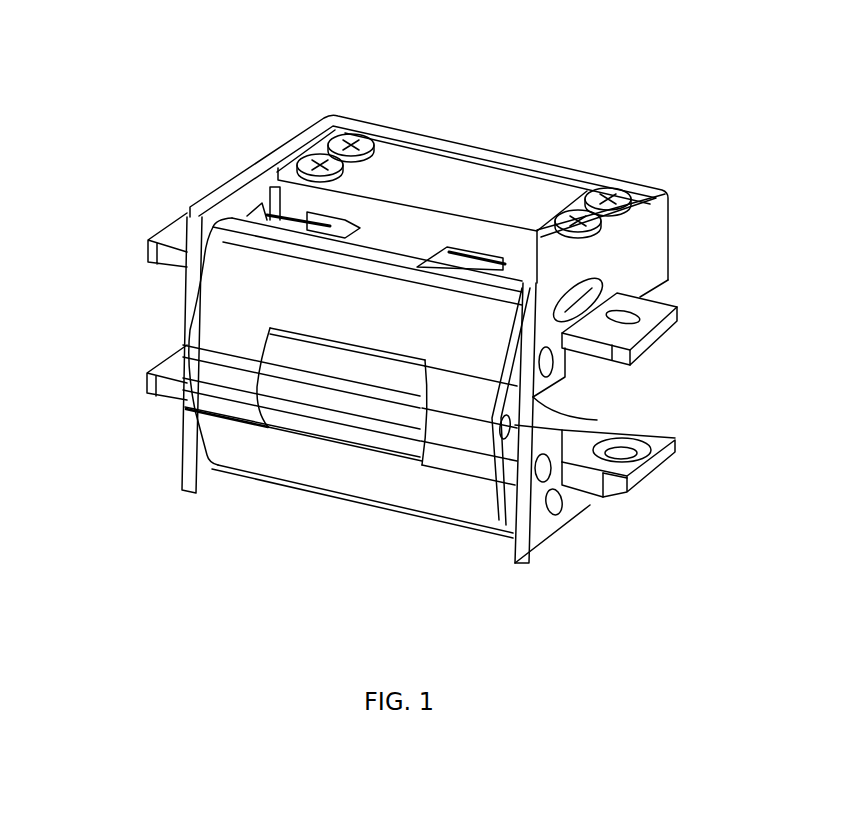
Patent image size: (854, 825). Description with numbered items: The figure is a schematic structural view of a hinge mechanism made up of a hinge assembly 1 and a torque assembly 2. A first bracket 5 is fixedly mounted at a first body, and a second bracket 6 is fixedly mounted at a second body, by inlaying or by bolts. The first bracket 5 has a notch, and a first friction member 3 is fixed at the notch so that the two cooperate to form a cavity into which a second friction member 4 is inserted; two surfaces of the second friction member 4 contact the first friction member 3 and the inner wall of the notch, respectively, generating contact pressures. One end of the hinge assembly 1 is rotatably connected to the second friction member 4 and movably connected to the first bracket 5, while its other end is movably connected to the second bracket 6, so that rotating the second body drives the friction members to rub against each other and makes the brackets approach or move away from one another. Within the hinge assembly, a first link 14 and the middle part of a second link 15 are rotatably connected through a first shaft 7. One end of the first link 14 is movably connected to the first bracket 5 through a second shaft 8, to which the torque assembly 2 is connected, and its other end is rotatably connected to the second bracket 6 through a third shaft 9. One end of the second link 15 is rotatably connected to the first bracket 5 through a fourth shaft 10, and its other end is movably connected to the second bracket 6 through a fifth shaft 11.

The hinge assembly 1 is at (507, 130).
The torque assembly 2 is at (142, 315).
The first friction member 3 is at (535, 187).
The second friction member 4 is at (348, 205).
The first bracket 5 is at (638, 265).
The second bracket 6 is at (627, 476).
The first shaft 7 is at (597, 420).
The second shaft 8 is at (632, 318).
The third shaft 9 is at (552, 473).
The fourth shaft 10 is at (548, 366).
The fifth shaft 11 is at (559, 488).
The first link 14 is at (245, 265).
The second link 15 is at (307, 465).